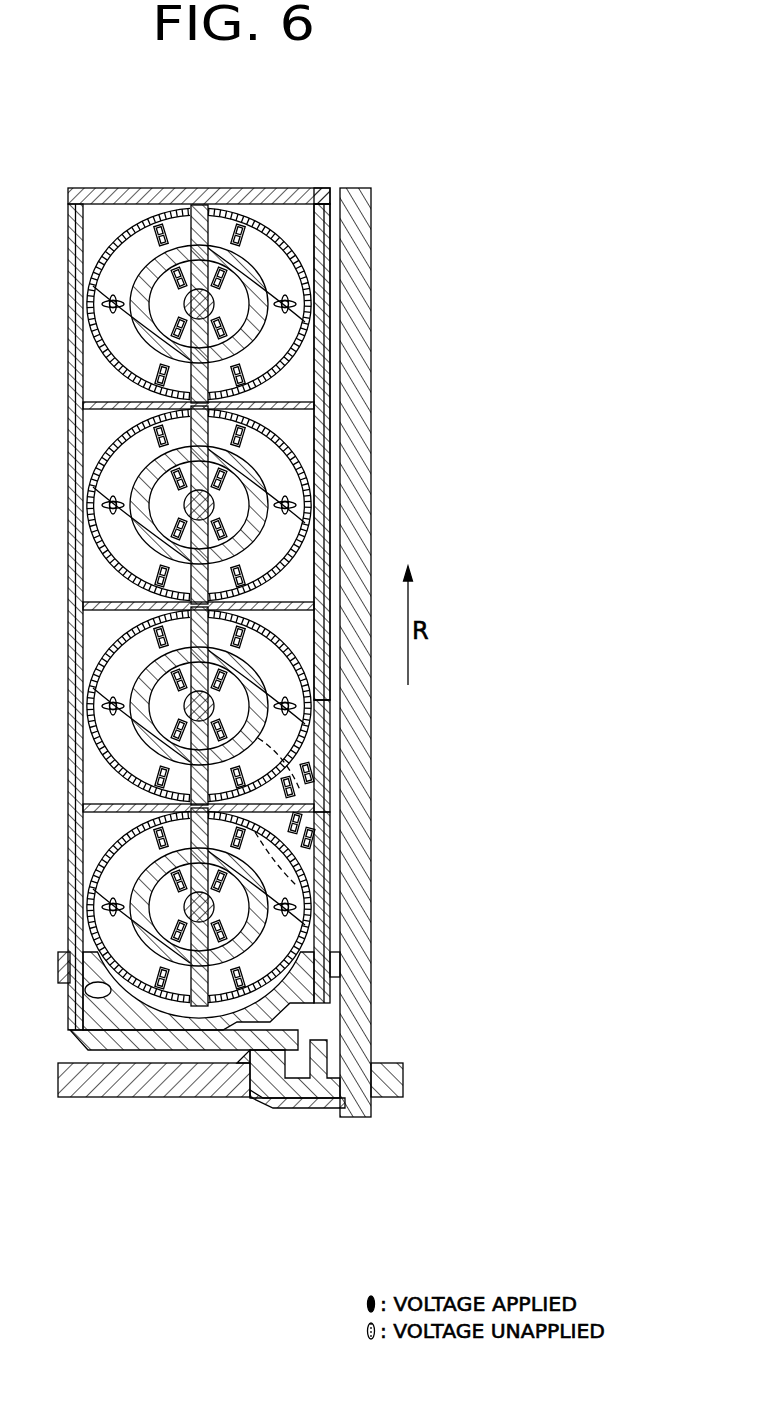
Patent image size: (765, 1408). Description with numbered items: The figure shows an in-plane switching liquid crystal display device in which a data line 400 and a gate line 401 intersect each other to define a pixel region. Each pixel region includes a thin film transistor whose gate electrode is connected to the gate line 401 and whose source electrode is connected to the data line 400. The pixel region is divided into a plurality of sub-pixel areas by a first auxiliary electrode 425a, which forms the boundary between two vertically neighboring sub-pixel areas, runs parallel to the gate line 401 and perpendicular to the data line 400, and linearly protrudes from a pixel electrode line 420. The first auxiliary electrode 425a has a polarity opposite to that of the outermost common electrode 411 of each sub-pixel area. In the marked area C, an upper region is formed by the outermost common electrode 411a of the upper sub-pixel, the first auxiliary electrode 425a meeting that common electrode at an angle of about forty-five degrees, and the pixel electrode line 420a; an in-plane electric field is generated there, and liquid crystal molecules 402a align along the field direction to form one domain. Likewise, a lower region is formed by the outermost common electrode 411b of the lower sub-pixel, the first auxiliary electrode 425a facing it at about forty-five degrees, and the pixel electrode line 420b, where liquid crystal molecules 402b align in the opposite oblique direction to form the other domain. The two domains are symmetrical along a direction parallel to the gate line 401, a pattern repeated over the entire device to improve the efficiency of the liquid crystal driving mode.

The data line 400 is at (353, 202).
The gate line 401 is at (82, 1097).
The outermost common electrode 411 is at (306, 525).
The outermost common electrode of upper sub-pixel 411a is at (262, 770).
The outermost common electrode of lower sub-pixel 411b is at (318, 893).
The pixel electrode line 420 is at (328, 480).
The pixel electrode line of upper region 420a is at (314, 808).
The pixel electrode line of lower region 420b is at (318, 877).
The first auxiliary electrode 425a is at (303, 405).
The liquid crystal molecules 402a is at (310, 777).
The liquid crystal molecules 402b is at (311, 843).
The marked area C is at (343, 925).